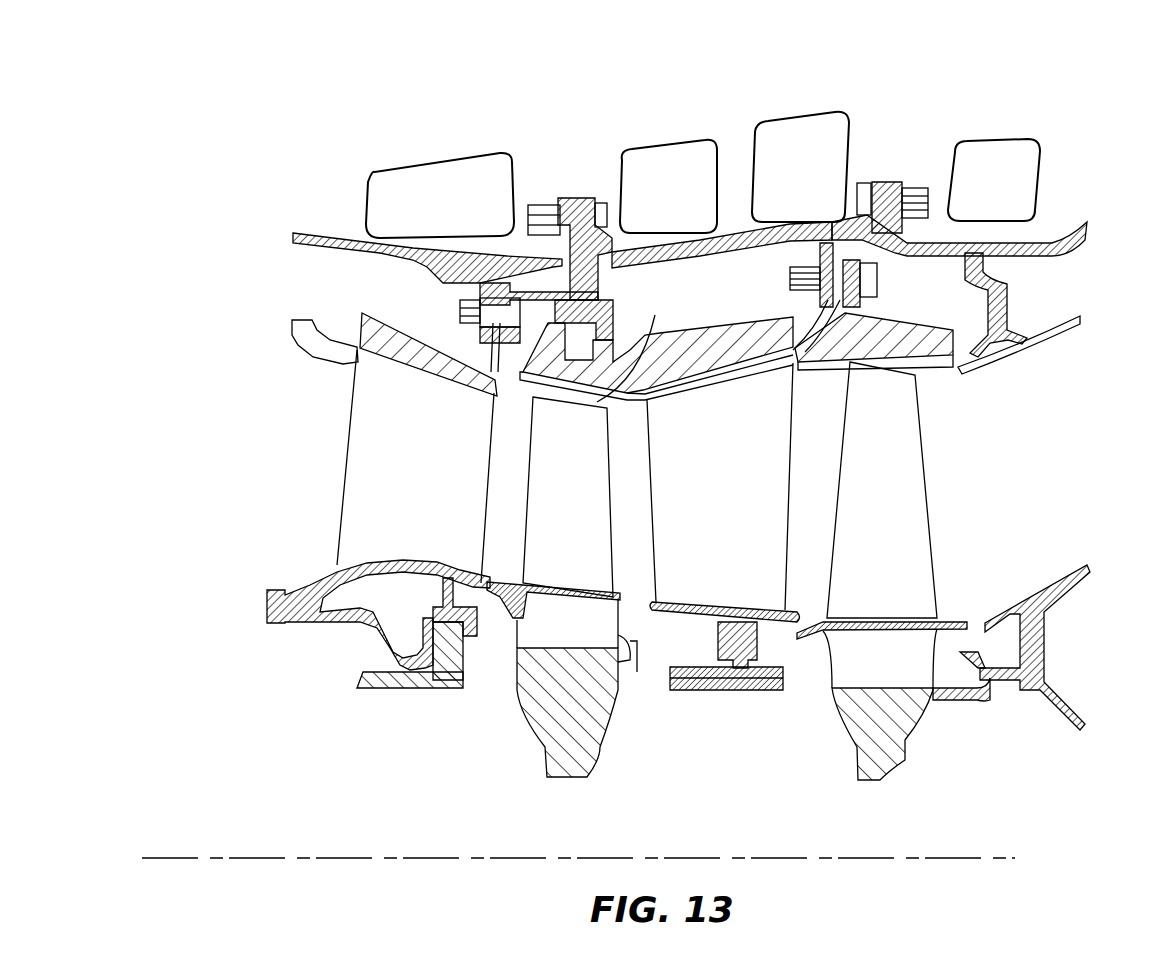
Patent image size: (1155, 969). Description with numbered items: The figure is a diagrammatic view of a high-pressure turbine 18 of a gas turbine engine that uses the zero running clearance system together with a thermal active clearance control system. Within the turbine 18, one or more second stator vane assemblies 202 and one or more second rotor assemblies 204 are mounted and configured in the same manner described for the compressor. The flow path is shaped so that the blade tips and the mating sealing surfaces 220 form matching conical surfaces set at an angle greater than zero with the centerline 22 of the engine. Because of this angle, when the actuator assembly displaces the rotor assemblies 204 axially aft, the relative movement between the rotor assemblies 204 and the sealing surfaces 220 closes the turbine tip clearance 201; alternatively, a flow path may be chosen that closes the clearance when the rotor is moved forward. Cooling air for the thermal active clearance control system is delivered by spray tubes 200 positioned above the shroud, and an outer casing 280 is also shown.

The turbine 18 is at (220, 129).
The spray tubes 200 is at (434, 153).
The outer casing 280 is at (321, 231).
The turbine tip clearance 201 is at (600, 405).
The sealing surfaces 220 is at (648, 348).
The second stator vane assemblies 202 is at (313, 630).
The second rotor assemblies 204 is at (608, 742).
The centerline 22 is at (258, 855).